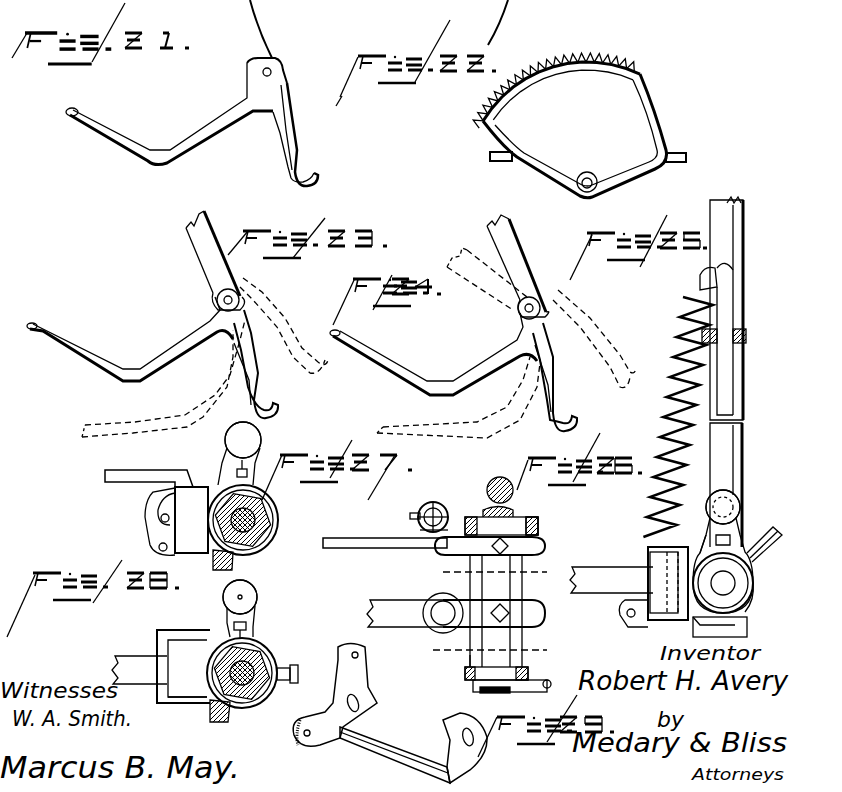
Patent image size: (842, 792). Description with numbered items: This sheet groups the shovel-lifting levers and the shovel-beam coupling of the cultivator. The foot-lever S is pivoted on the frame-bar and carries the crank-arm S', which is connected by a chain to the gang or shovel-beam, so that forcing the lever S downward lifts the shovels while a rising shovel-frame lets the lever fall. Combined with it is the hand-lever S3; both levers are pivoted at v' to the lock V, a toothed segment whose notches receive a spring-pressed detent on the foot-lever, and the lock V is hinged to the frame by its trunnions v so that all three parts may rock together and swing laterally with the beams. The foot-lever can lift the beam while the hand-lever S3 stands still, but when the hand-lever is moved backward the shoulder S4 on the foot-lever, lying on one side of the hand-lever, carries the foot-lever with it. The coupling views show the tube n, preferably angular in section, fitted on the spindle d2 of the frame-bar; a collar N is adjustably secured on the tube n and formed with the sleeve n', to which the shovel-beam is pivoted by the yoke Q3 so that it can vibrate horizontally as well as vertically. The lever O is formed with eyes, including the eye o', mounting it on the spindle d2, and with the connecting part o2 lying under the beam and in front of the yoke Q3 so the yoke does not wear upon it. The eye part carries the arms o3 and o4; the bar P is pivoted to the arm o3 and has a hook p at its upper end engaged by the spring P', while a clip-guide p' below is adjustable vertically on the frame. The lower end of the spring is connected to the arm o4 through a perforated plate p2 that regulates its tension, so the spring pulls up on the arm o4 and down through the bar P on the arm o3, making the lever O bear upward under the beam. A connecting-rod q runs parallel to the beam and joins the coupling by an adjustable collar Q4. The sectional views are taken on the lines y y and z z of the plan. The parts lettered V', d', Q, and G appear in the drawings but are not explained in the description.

In FIG. 21, the foot-lever S is at (169, 114).
In FIG. 23, the foot-lever S is at (136, 367).
In FIG. 24, the foot-lever S is at (435, 375).
In FIG. 21, the crank-arm S' is at (283, 122).
In FIG. 23, the crank-arm S' is at (281, 348).
In FIG. 24, the crank-arm S' is at (584, 360).
In FIG. 23, the hand-lever S3 is at (196, 239).
In FIG. 24, the hand-lever S3 is at (507, 253).
In FIG. 23, the shoulder S4 is at (212, 299).
In FIG. 24, the shoulder S4 is at (515, 312).
In FIG. 22, the lock or toothed segment V is at (556, 74).
In FIG. 22, the sector frame V' is at (575, 145).
In FIG. 22, the trunnions or pivots v is at (489, 154).
In FIG. 22, the pivot v' is at (685, 149).
In FIG. 25, the rod d' is at (740, 308).
In FIG. 26, the rod d' is at (490, 482).
In FIG. 25, the hook p is at (691, 276).
In FIG. 25, the clip-guide p' is at (738, 336).
In FIG. 25, the spring P' is at (677, 417).
In FIG. 26, the spring P' is at (420, 512).
In FIG. 25, the bar P is at (737, 485).
In FIG. 26, the bar P is at (495, 511).
In FIG. 25, the bar Q is at (611, 580).
In FIG. 26, the bar Q is at (398, 607).
In FIG. 28, the bar Q is at (139, 659).
In FIG. 26, the adjustable collar Q4 is at (544, 545).
In FIG. 27, the adjustable collar Q4 is at (275, 510).
In FIG. 28, the yoke Q3 is at (197, 707).
In FIG. 25, the sleeve n' is at (653, 575).
In FIG. 28, the sleeve n' is at (183, 649).
In FIG. 26, the tube n is at (458, 665).
In FIG. 27, the tube n is at (242, 520).
In FIG. 28, the tube n is at (297, 678).
In FIG. 25, the lever O is at (724, 563).
In FIG. 27, the lever O is at (233, 453).
In FIG. 28, the lever O is at (250, 609).
In FIG. 29, the lever O is at (362, 695).
In FIG. 25, the eye o' is at (699, 535).
In FIG. 26, the eye o' is at (517, 672).
In FIG. 29, the eye o' is at (462, 744).
In FIG. 25, the connecting part o2 is at (700, 622).
In FIG. 27, the connecting part o2 is at (232, 565).
In FIG. 28, the connecting part o2 is at (225, 718).
In FIG. 29, the connecting part o2 is at (397, 750).
In FIG. 25, the arm o3 is at (730, 510).
In FIG. 26, the arm o3 is at (540, 520).
In FIG. 27, the arm o3 is at (246, 440).
In FIG. 28, the arm o3 is at (244, 597).
In FIG. 29, the arm o3 is at (365, 652).
In FIG. 26, the arm o4 is at (420, 531).
In FIG. 27, the arm o4 is at (160, 527).
In FIG. 29, the arm o4 is at (303, 746).
In FIG. 25, the connecting-rod q is at (767, 546).
In FIG. 26, the connecting-rod q is at (370, 547).
In FIG. 27, the connecting-rod q is at (142, 466).
In FIG. 25, the pintle or spindle d2 is at (720, 585).
In FIG. 27, the pintle or spindle d2 is at (272, 547).
In FIG. 28, the pintle or spindle d2 is at (255, 668).
In FIG. 25, the collar N is at (735, 610).
In FIG. 26, the collar N is at (540, 620).
In FIG. 28, the collar N is at (290, 667).
In FIG. 25, the perforated plate p2 is at (630, 627).
In FIG. 26, the perforated plate p2 is at (409, 516).
In FIG. 27, the perforated plate p2 is at (160, 543).
In FIG. 26, the section line y y is at (493, 572).
In FIG. 26, the section line z z is at (493, 649).
In FIG. 26, the base G is at (513, 694).